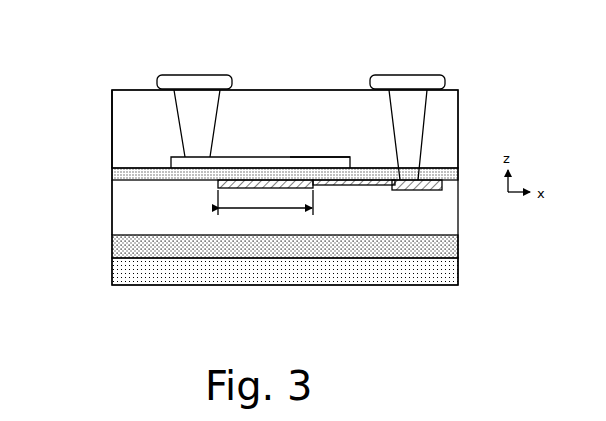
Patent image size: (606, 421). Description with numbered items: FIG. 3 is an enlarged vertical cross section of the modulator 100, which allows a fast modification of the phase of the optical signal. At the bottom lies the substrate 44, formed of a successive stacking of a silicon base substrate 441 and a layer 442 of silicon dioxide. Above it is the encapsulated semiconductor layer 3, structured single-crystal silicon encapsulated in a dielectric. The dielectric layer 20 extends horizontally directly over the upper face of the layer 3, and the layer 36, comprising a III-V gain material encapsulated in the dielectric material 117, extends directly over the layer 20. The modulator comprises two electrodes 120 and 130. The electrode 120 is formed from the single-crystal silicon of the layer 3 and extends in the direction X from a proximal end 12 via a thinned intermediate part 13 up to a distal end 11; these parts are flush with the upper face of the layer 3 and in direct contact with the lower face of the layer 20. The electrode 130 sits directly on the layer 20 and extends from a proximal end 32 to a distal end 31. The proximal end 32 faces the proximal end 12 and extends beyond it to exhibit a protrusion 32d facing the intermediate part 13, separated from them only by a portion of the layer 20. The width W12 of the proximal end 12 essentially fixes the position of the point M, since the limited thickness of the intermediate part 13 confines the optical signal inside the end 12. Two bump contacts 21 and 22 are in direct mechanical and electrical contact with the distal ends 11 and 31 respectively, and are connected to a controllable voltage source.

The modulator 100 is at (478, 70).
The dielectric material 117 is at (137, 108).
The layer 36 is at (112, 91).
The dielectric layer 20 is at (110, 176).
The encapsulated semiconductor layer 3 is at (112, 181).
The substrate 44 is at (229, 270).
The layer of dielectric material 442 is at (112, 246).
The base substrate 441 is at (112, 275).
The bump contact 22 is at (207, 74).
The bump contact 21 is at (405, 74).
The electrode 130 is at (299, 92).
The distal end 31 is at (215, 165).
The proximal end 32 is at (330, 55).
The protrusion 32d is at (333, 162).
The electrode 120 is at (330, 273).
The proximal end 12 is at (300, 188).
The thinned intermediate part 13 is at (340, 186).
The distal end 11 is at (412, 191).
The width of the proximal end W12 is at (245, 210).